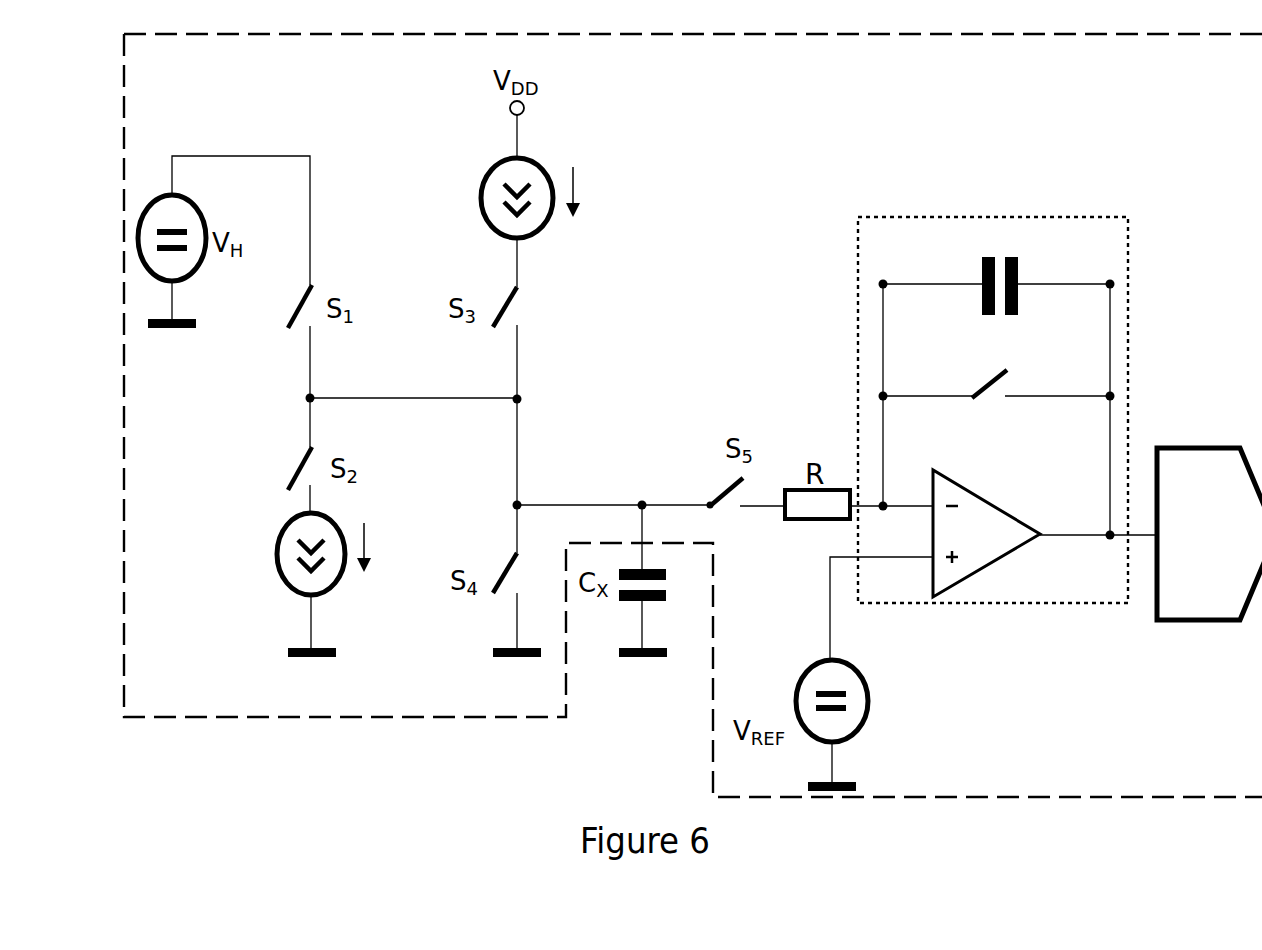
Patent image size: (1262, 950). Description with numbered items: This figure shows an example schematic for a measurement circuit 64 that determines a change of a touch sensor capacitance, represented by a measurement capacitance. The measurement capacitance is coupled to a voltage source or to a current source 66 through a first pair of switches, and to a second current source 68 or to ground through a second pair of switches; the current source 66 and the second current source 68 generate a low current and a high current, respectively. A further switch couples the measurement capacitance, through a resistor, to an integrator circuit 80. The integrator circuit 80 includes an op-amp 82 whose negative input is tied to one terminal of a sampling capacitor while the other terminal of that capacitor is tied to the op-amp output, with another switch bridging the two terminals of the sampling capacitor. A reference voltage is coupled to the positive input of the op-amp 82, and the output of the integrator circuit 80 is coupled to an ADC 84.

The measurement circuit 64 is at (416, 730).
The current source 66 is at (264, 556).
The second current source 68 is at (472, 200).
The integrator circuit 80 is at (1019, 385).
The op-amp 82 is at (986, 533).
The ADC 84 is at (1209, 534).